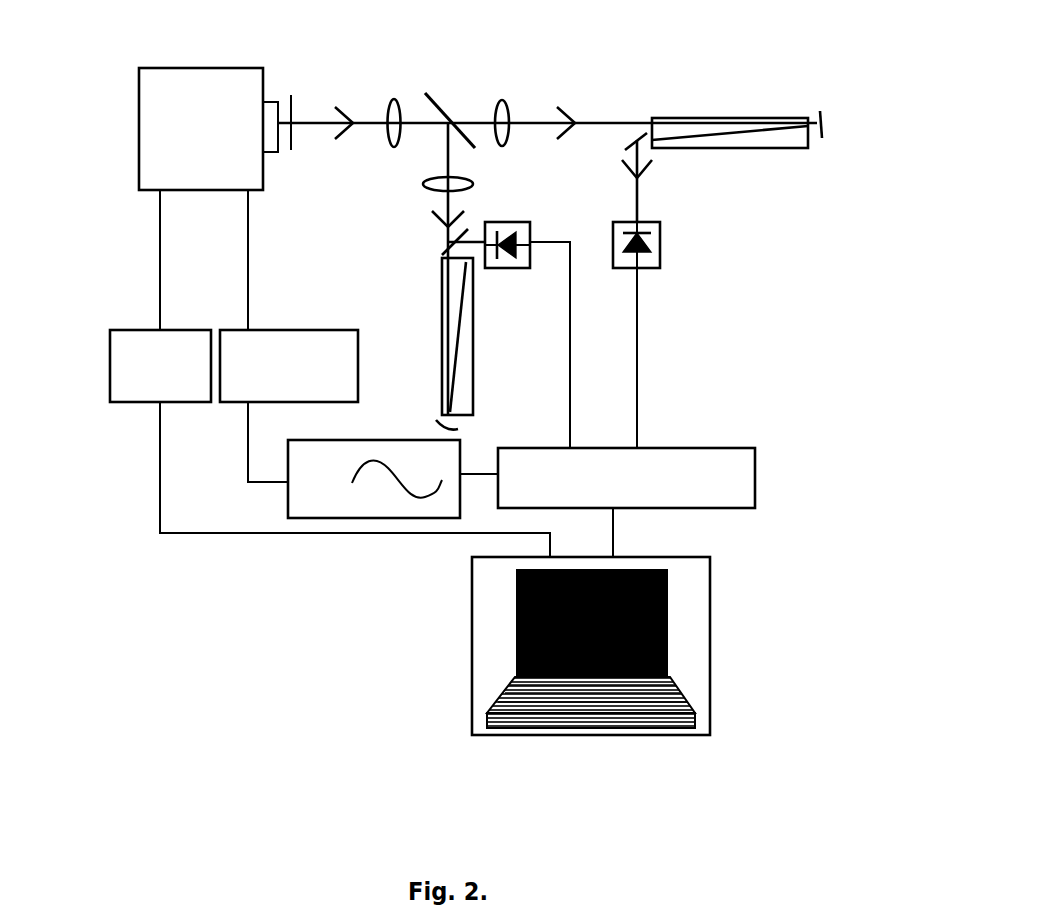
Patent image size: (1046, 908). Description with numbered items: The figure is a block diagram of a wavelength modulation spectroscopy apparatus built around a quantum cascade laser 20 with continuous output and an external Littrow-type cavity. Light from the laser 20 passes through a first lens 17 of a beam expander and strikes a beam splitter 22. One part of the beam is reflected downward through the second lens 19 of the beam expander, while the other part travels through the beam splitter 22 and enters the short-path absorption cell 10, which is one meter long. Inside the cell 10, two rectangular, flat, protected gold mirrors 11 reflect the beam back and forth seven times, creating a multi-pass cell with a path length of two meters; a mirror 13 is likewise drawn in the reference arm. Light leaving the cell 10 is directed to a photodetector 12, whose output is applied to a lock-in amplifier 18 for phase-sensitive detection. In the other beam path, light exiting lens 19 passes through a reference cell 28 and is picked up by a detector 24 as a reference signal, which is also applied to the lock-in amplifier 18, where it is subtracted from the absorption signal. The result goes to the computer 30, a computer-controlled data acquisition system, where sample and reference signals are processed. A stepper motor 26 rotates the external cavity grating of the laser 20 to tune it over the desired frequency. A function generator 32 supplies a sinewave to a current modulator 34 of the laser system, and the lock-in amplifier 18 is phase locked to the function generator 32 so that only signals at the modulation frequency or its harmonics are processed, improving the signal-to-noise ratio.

The short-path absorption cell 10 is at (700, 118).
The protected gold mirrors 11 is at (828, 123).
The photodetector 12 is at (660, 243).
The mirror 13 is at (445, 243).
The first lens 17 is at (385, 137).
The lock-in amplifier 18 is at (673, 448).
The second lens 19 is at (425, 191).
The quantum cascade laser 20 is at (139, 72).
The beam splitter 22 is at (472, 73).
The detector 24 is at (514, 268).
The stepper motor 26 is at (110, 364).
The reference cell 28 is at (440, 331).
The computer 30 is at (475, 648).
The function generator 32 is at (288, 503).
The current modulator 34 is at (238, 328).